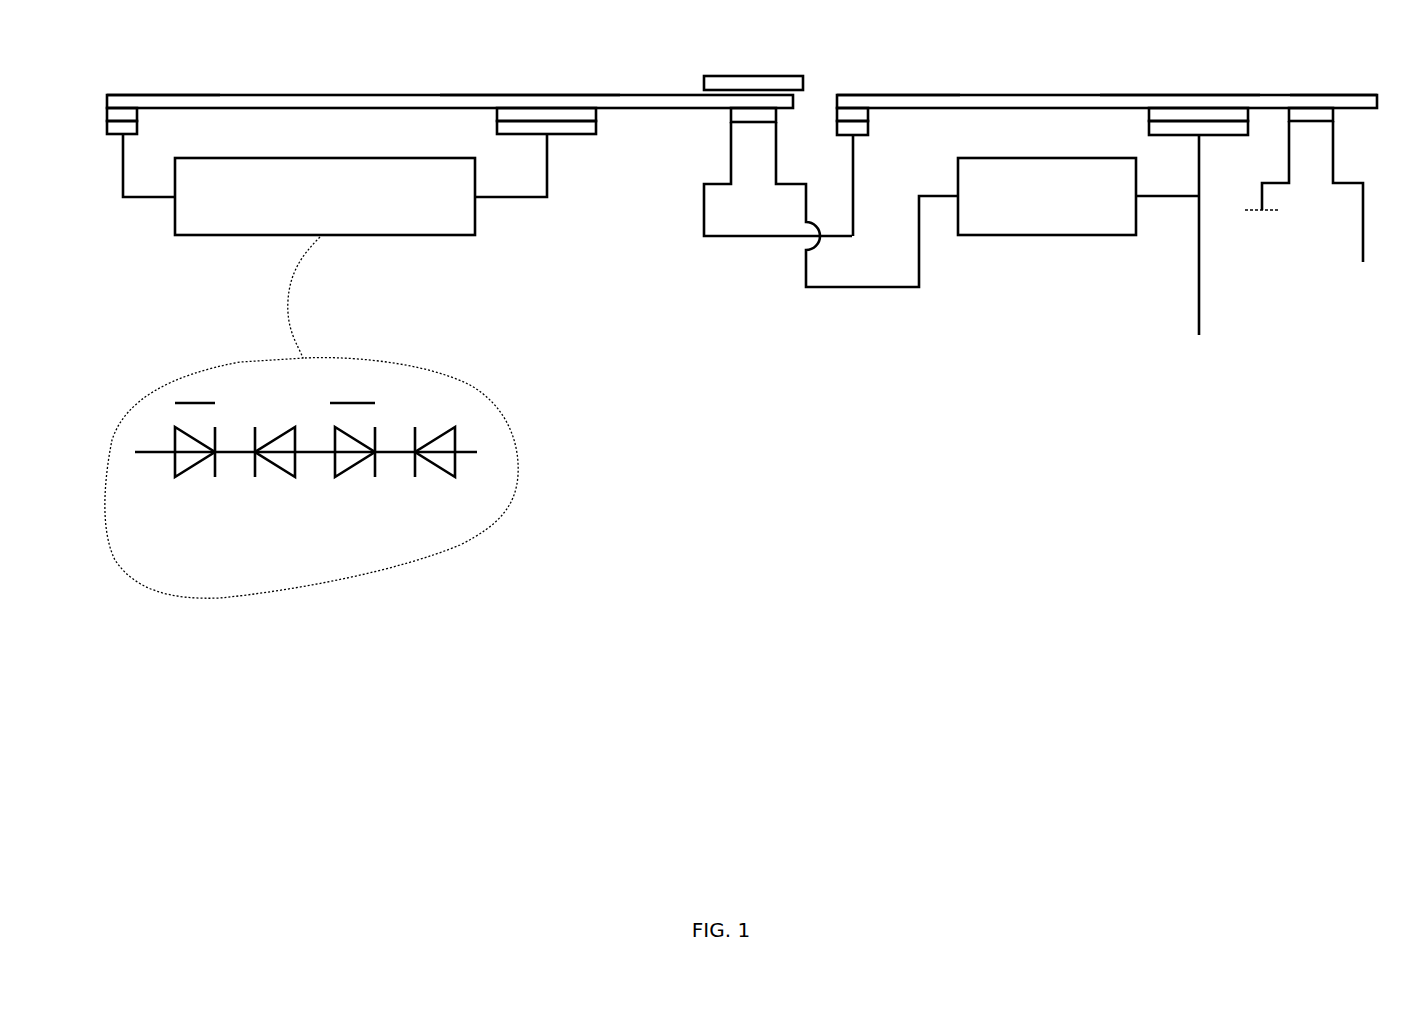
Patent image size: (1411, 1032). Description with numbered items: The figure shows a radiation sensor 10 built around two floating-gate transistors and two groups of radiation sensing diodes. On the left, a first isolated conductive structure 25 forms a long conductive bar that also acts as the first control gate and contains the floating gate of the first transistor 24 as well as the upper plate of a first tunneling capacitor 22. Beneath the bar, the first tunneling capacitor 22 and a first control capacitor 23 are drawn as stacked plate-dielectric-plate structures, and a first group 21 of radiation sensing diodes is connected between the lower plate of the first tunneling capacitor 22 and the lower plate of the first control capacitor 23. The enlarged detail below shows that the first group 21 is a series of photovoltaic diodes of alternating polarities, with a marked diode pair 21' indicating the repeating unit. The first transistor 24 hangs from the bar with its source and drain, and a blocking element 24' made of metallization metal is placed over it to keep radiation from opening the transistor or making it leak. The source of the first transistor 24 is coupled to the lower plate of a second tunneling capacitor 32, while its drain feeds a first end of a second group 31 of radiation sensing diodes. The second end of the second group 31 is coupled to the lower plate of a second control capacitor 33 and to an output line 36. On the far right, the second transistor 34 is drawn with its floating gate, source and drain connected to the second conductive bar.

The radiation sensor 10 is at (667, 693).
The first group of radiation sensing diodes 21 is at (311, 378).
The diode pair 21' is at (275, 404).
The first tunneling capacitor 22 is at (136, 123).
The first control capacitor 23 is at (509, 120).
The first transistor 24 is at (788, 149).
The blocking element 24' is at (753, 51).
The first isolated conductive structure 25 is at (248, 94).
The second group of radiation sensing diodes 31 is at (1036, 208).
The second tunneling capacitor 32 is at (875, 136).
The second control capacitor 33 is at (1156, 98).
The second transistor 34 is at (1316, 168).
The output line 36 is at (1168, 244).